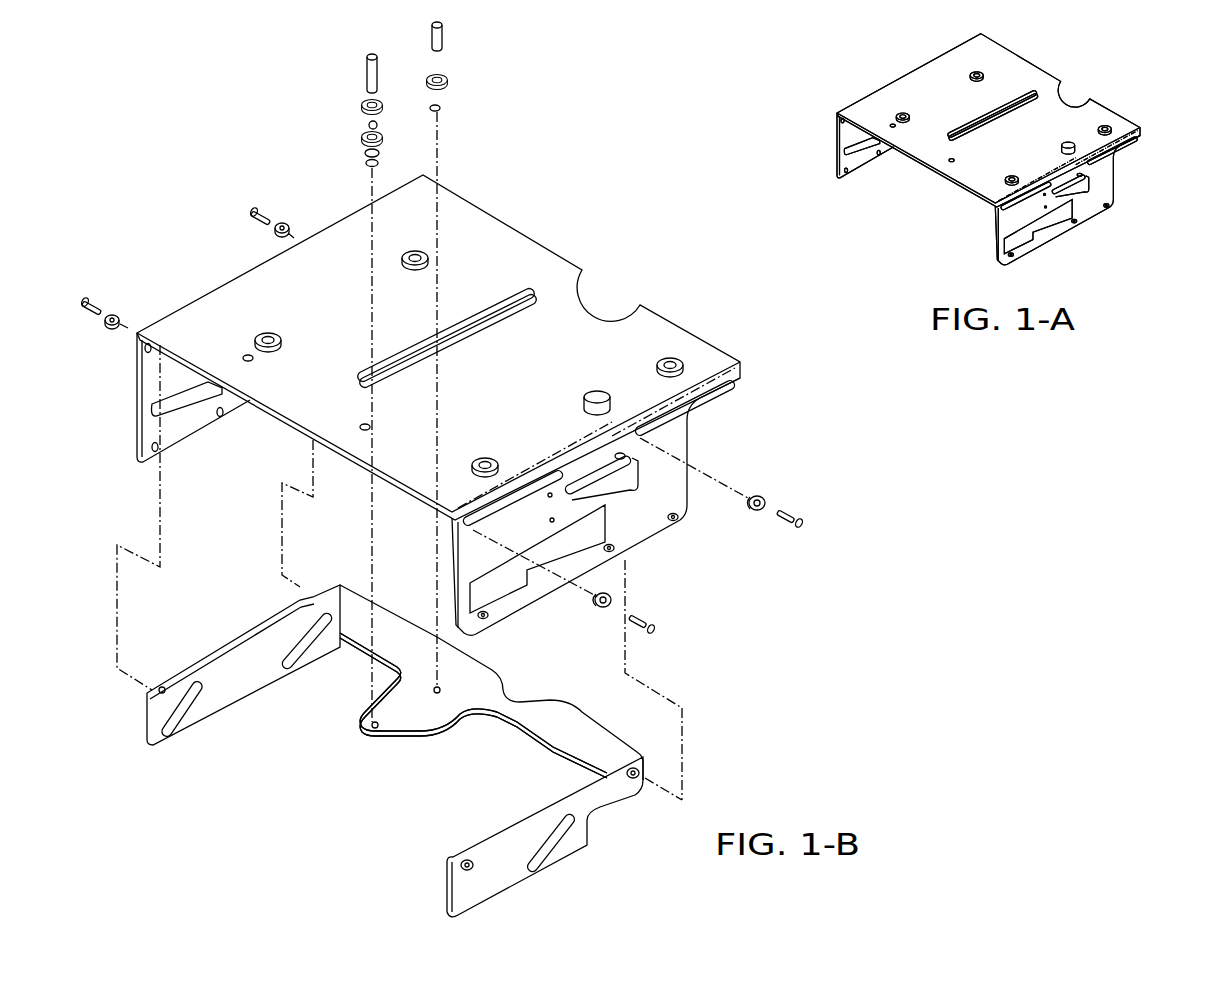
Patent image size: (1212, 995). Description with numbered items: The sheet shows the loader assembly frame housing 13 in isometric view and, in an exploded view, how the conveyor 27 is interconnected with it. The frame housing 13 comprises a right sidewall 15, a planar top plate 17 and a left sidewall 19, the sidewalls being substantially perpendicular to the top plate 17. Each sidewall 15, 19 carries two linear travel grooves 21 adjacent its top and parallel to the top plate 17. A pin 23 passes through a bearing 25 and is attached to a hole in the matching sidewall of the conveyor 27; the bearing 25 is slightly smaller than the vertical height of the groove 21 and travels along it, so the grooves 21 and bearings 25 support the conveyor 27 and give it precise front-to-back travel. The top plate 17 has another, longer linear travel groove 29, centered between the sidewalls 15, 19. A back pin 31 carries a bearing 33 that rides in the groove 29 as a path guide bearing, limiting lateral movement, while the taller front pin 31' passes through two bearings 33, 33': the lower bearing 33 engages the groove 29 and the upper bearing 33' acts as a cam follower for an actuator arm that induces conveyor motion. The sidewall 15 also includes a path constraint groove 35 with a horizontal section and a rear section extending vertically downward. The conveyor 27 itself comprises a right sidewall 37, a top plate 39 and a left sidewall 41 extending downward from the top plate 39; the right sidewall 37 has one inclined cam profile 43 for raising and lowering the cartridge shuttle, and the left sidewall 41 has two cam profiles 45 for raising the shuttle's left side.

In FIG. 1-A, the loader assembly frame housing 13 is at (873, 93).
In FIG. 1-B, the right sidewall 15 is at (688, 494).
In FIG. 1-A, the right sidewall 15 is at (1113, 182).
In FIG. 1-B, the top plate 17 is at (502, 220).
In FIG. 1-A, the top plate 17 is at (937, 177).
In FIG. 1-B, the left sidewall 19 is at (135, 392).
In FIG. 1-A, the left sidewall 19 is at (835, 152).
In FIG. 1-B, the linear travel grooves 21 is at (566, 486).
In FIG. 1-B, the pin 23 is at (803, 520).
In FIG. 1-B, the bearing 25 is at (768, 498).
In FIG. 1-B, the conveyor 27 is at (590, 718).
In FIG. 1-B, the linear travel groove 29 is at (535, 293).
In FIG. 1-B, the pin 31 is at (472, 32).
In FIG. 1-B, the front pin 31' is at (333, 53).
In FIG. 1-B, the bearing 33 is at (406, 110).
In FIG. 1-B, the upper bearing 33' is at (335, 89).
In FIG. 1-B, the path constraint groove 35 is at (636, 482).
In FIG. 1-B, the right sidewall 37 is at (502, 898).
In FIG. 1-B, the top plate 39 is at (510, 690).
In FIG. 1-B, the left sidewall 41 is at (150, 722).
In FIG. 1-B, the inclined cam profile 43 is at (563, 847).
In FIG. 1-B, the cam profiles 45 is at (302, 667).